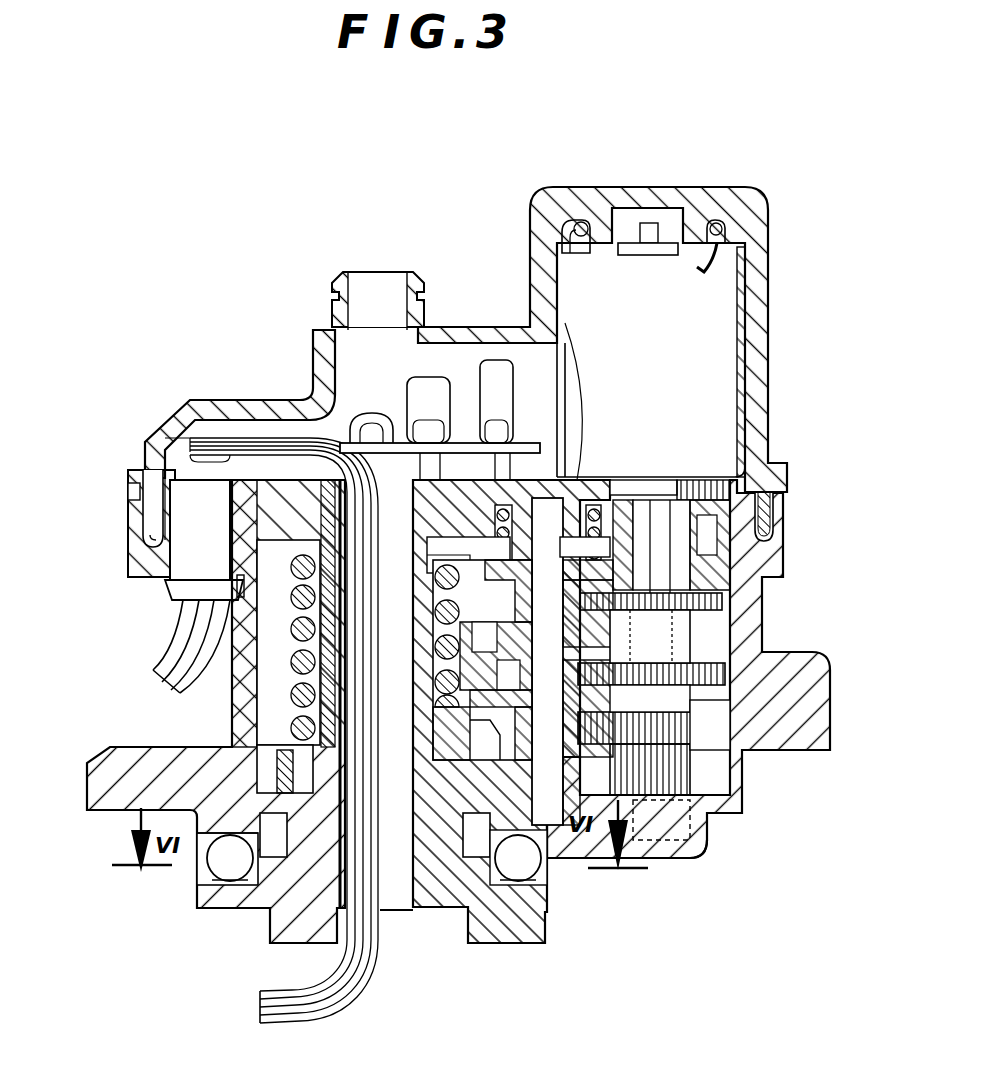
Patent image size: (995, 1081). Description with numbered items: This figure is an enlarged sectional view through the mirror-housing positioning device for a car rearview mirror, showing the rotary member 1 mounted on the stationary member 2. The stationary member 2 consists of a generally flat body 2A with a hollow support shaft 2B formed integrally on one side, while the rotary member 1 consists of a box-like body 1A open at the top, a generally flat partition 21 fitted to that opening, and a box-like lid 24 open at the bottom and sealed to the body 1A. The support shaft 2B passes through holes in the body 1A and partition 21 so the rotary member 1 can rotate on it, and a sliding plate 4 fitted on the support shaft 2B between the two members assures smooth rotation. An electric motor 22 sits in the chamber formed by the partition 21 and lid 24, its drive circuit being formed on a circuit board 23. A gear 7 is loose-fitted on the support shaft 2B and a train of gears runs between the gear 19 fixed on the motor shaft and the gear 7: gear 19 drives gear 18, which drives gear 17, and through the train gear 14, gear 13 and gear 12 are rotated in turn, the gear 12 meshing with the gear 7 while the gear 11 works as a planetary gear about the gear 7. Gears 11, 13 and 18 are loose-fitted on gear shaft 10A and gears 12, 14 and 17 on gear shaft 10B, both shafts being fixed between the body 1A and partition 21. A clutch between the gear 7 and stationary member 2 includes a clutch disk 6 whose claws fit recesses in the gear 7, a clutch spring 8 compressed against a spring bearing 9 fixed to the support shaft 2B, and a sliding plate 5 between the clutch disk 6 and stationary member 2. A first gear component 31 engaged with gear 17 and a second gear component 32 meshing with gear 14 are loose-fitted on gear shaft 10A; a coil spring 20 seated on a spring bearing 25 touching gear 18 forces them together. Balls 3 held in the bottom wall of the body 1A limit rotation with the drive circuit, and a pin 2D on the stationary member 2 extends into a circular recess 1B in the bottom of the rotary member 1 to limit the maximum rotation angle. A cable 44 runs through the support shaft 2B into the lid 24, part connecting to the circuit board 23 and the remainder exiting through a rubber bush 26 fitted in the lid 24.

The rotary member 1 is at (670, 860).
The box-like body 1A is at (703, 837).
The circular recess 1B is at (265, 840).
The stationary member 2 is at (223, 910).
The flat body 2A is at (208, 893).
The hollow support shaft 2B is at (192, 512).
The pin 2D is at (430, 933).
The balls 3 is at (523, 870).
The sliding plate 4 is at (265, 900).
The sliding plate 5 is at (275, 805).
The clutch disk 6 is at (233, 747).
The gear 7 is at (235, 730).
The clutch spring 8 is at (140, 550).
The spring bearing 9 is at (300, 528).
The gear shaft 10A is at (550, 822).
The gear shaft 10B is at (690, 845).
The gear 11 is at (475, 840).
The gear 12 is at (693, 767).
The gear 13 is at (700, 750).
The gear 14 is at (682, 698).
The gear 17 is at (700, 610).
The gear 18 is at (477, 560).
The gear 19 is at (700, 482).
The coil spring 20 is at (612, 492).
The partition 21 is at (583, 478).
The electric motor 22 is at (720, 283).
The circuit board 23 is at (380, 448).
The lid 24 is at (690, 187).
The spring bearing 25 is at (520, 500).
The rubber bush 26 is at (160, 500).
The first gear component 31 is at (640, 655).
The second gear component 32 is at (753, 535).
The cable 44 is at (300, 655).